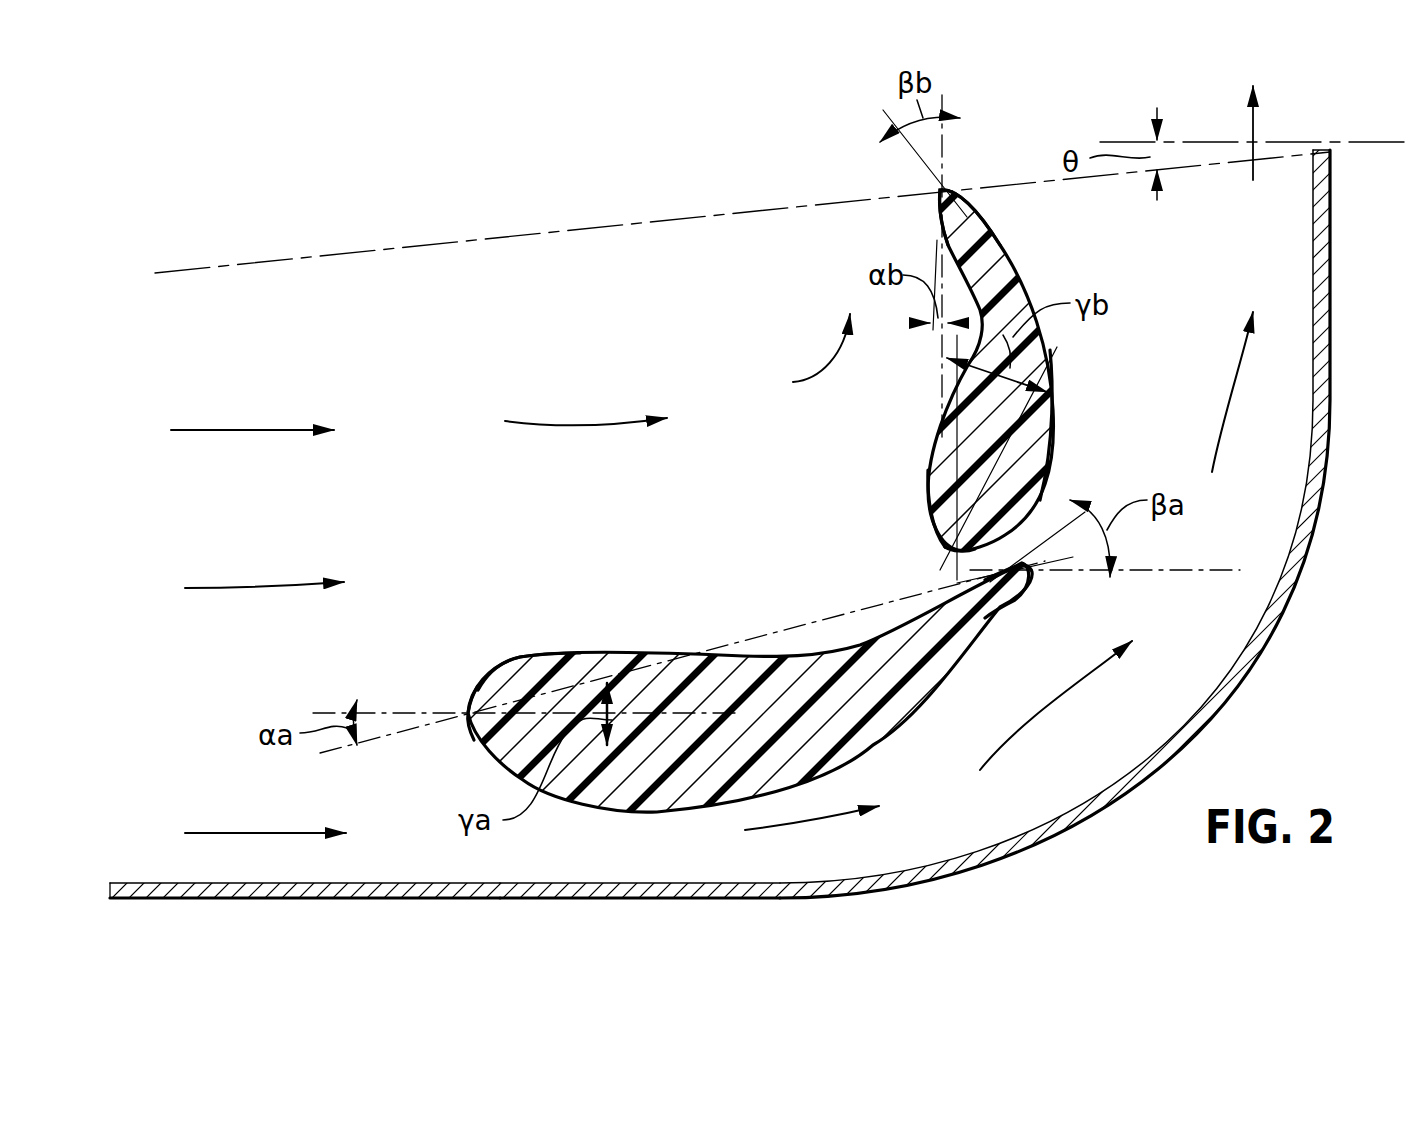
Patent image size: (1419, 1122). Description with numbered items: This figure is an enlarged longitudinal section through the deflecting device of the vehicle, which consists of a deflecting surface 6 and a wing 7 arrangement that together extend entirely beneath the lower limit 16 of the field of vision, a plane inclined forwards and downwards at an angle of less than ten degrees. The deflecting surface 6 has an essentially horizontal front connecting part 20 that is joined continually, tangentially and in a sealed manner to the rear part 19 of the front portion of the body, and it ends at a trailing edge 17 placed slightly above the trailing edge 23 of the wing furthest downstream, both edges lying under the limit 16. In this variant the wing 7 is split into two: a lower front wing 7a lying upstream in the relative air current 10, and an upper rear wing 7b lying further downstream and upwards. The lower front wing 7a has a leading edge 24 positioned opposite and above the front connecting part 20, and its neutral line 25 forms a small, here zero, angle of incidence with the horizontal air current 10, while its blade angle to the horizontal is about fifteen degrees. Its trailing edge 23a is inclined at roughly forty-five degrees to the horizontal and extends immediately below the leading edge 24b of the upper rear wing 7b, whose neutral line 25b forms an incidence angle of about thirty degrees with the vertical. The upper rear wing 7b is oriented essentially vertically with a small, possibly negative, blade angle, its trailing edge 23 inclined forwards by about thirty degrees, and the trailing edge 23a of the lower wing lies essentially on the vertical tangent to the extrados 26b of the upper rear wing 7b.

The deflecting surface 6 is at (1318, 462).
The wing 7 is at (809, 525).
The lower front wing 7a is at (737, 673).
The upper rear wing 7b is at (935, 472).
The relative air current 10 is at (229, 515).
The lower limit of the field of vision 16 is at (363, 253).
The trailing edge of the deflecting surface 17 is at (1313, 197).
The rear part of the front portion of the body 19 is at (222, 887).
The front connecting part 20 is at (737, 888).
The trailing edge 23 is at (972, 200).
The trailing edge of the lower front wing 23a is at (1003, 598).
The leading edge 24 is at (517, 690).
The leading edge of the upper rear wing 24b is at (932, 518).
The neutral line 25 is at (470, 716).
The neutral line of the leading edge of the upper rear wing 25b is at (955, 546).
The extrados of the upper rear wing 26b is at (1055, 438).